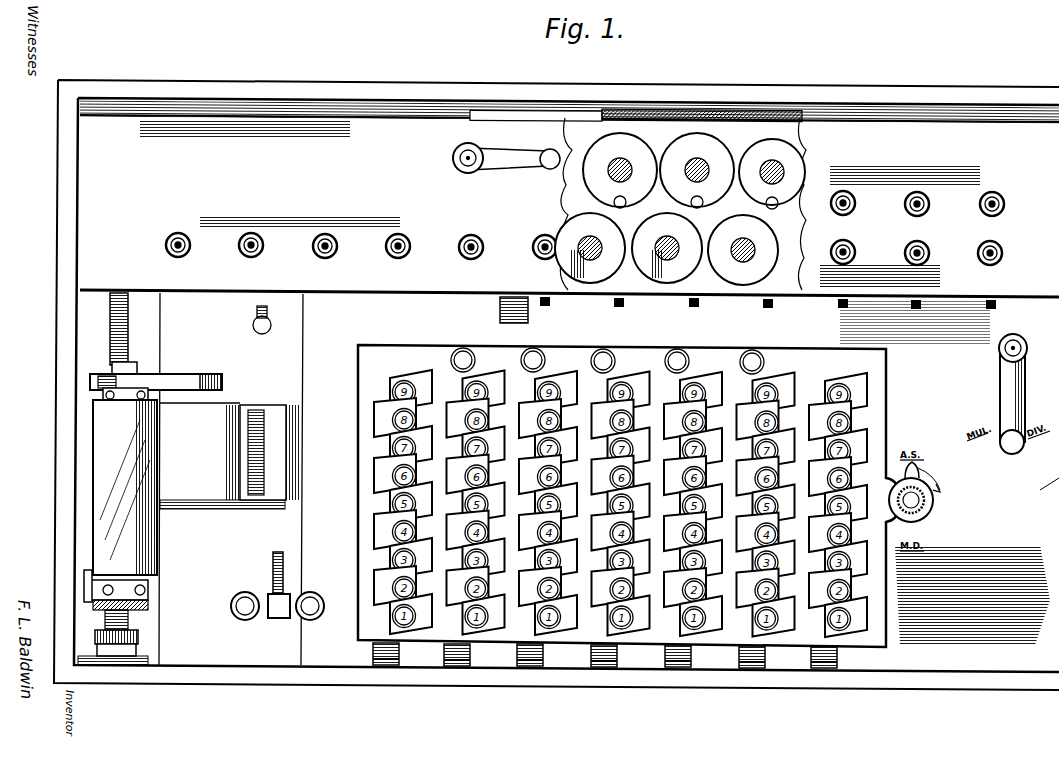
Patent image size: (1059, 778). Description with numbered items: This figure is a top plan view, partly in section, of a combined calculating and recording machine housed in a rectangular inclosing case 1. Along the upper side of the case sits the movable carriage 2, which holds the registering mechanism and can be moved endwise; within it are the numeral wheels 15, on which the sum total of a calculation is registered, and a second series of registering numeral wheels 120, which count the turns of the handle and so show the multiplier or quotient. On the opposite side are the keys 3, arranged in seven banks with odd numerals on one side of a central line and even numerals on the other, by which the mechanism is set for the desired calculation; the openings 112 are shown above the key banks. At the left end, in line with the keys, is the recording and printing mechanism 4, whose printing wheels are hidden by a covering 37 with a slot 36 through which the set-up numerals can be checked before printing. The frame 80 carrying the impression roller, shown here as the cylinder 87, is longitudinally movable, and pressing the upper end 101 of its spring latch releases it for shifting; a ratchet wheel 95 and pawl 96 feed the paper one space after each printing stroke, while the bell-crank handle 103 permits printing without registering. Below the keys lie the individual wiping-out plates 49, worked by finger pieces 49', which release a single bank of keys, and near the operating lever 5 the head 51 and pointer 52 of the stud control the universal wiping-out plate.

The inclosing case 1 is at (1047, 494).
The movable carriage 2 is at (467, 164).
The keys 3 is at (798, 634).
The recording and printing mechanism 4 is at (230, 587).
The operating lever 5 is at (1000, 405).
The numeral wheels 15 is at (575, 258).
The slot 36 is at (262, 405).
The covering 37 is at (231, 396).
The endwise-moving plates 49 is at (583, 655).
The finger pieces 49' is at (585, 690).
The operating head 51 is at (934, 500).
The pointer 52 is at (922, 472).
The frame 80 is at (103, 395).
The cylinder 87 is at (110, 490).
The ratchet wheel 95 is at (98, 382).
The pawl 96 is at (172, 383).
The upper end of latch 101 is at (86, 585).
The bell-crank handle 103 is at (272, 583).
The openings 112 is at (607, 350).
The registering numeral wheels 120 is at (645, 150).